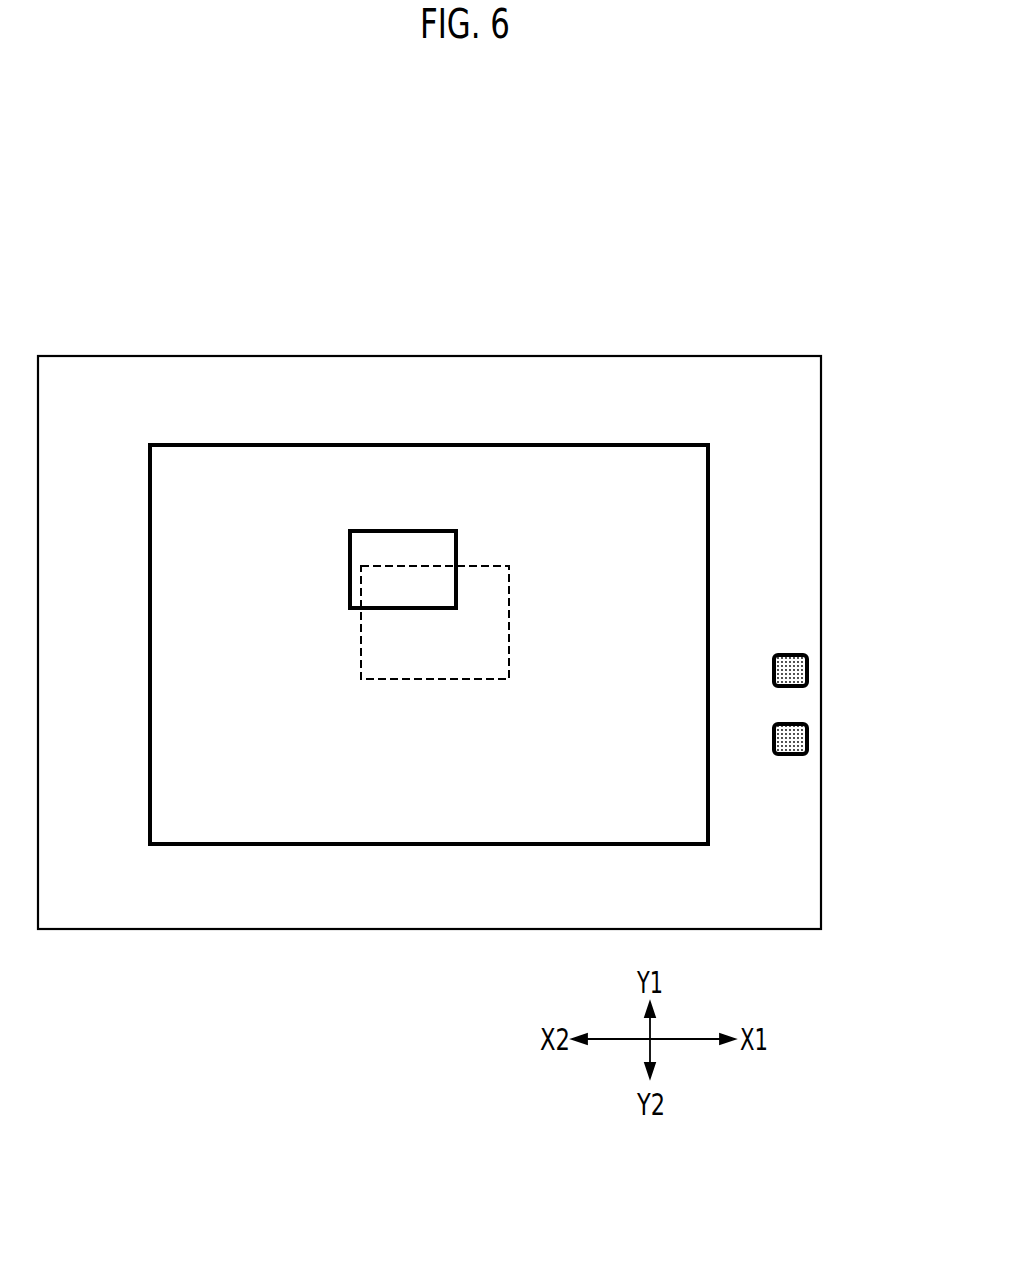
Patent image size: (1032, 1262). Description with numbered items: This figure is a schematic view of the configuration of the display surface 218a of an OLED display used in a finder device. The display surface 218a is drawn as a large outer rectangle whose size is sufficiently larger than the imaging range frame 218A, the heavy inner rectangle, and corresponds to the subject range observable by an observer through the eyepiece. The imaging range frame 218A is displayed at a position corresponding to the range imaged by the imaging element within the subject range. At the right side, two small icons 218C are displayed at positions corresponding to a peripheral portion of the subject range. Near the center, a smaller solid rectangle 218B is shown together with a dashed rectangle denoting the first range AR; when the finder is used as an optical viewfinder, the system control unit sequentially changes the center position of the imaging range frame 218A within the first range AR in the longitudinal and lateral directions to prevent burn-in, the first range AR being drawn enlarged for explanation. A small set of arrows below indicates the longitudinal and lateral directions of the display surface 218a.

The display surface 218a is at (673, 356).
The imaging range frame 218A is at (258, 443).
The second display region (object image) 218B is at (424, 530).
The icon 218C is at (791, 655).
The first range AR is at (457, 680).